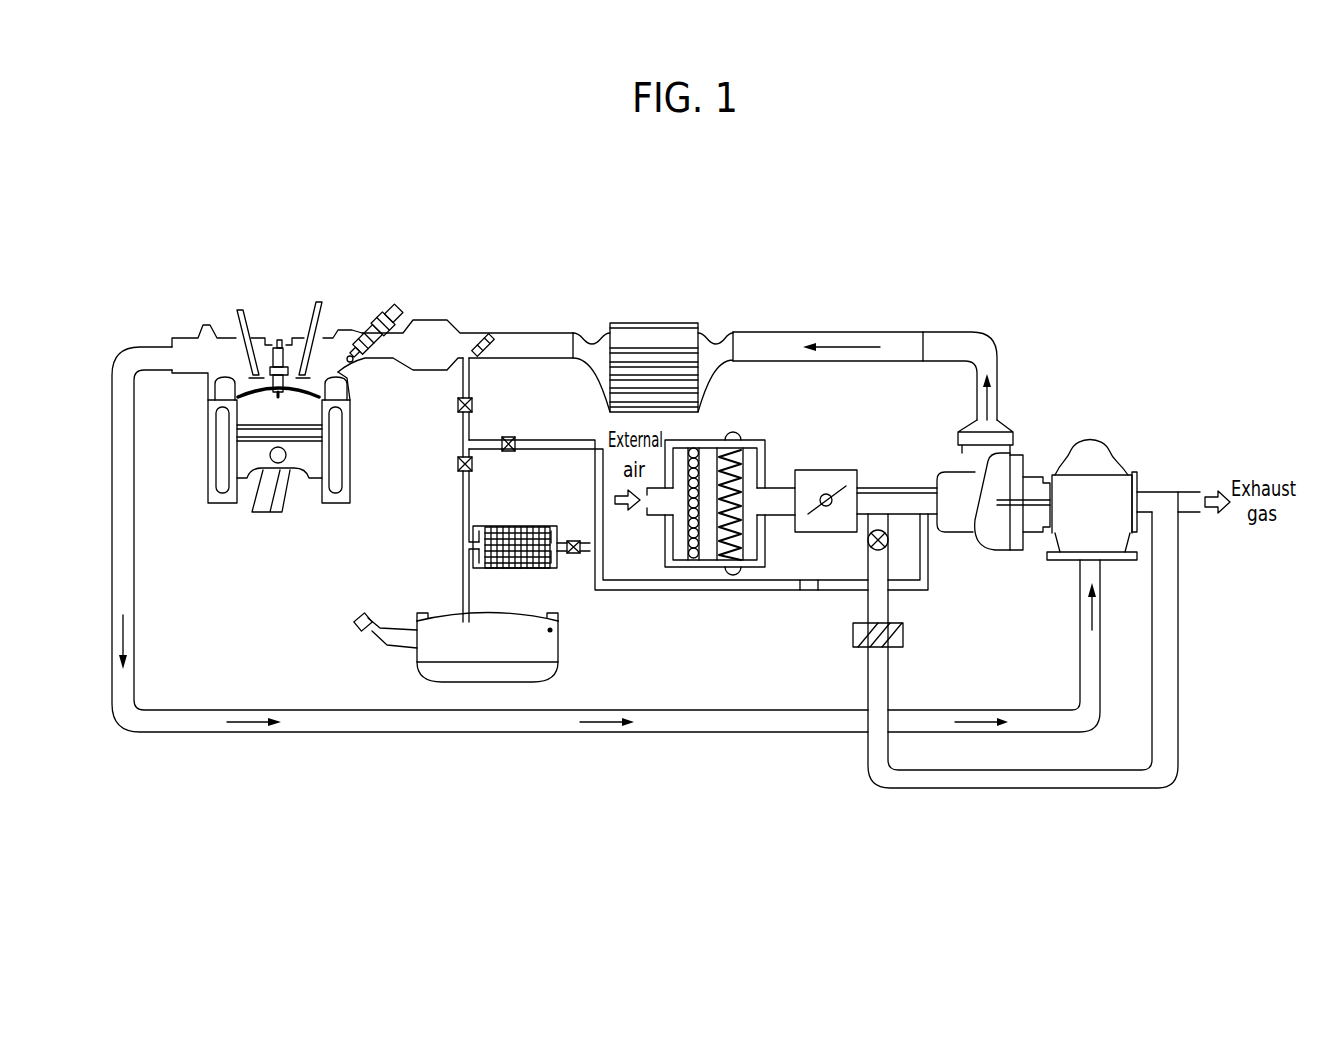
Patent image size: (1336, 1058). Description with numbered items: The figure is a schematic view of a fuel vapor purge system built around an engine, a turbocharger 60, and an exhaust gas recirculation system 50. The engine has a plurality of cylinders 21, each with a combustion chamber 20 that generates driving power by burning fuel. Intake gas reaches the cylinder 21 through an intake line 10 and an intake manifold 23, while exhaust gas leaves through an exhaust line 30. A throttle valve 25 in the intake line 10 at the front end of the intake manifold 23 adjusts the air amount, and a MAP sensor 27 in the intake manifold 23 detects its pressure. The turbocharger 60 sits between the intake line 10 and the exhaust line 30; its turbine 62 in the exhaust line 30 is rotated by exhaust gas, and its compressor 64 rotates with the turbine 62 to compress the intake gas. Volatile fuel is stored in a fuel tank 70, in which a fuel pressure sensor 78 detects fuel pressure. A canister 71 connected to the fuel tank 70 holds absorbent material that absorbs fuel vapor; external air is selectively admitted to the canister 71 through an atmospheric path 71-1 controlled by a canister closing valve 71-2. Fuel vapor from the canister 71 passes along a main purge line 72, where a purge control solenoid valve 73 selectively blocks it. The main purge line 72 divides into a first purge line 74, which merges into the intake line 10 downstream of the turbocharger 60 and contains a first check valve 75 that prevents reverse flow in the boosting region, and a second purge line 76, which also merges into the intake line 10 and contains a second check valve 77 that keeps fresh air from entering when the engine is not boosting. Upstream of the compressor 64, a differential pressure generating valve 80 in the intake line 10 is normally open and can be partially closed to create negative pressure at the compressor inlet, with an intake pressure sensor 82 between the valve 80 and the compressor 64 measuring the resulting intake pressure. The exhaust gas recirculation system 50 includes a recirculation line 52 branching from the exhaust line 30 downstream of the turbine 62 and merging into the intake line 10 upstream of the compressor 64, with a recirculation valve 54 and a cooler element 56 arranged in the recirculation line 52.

The intake line 10 is at (783, 488).
The combustion chamber 20 is at (257, 450).
The cylinder 21 is at (208, 448).
The intake manifold 23 is at (430, 320).
The throttle valve 25 is at (494, 342).
The MAP sensor 27 is at (450, 337).
The exhaust line 30 is at (705, 733).
The exhaust gas recirculation system 50 is at (1015, 640).
The recirculation line 52 is at (890, 665).
The recirculation valve 54 is at (888, 546).
The purge filter 56 is at (903, 636).
The turbocharger 60 is at (1030, 446).
The turbine 62 is at (1050, 382).
The compressor 64 is at (1017, 454).
The fuel tank 70 is at (558, 658).
The canister 71 is at (503, 526).
The atmospheric path 71-1 is at (564, 569).
The canister closing valve 71-2 is at (575, 541).
The main purge line 72 is at (462, 507).
The purge control solenoid valve 73 is at (458, 464).
The first purge line 74 is at (462, 433).
The first check valve 75 is at (458, 405).
The second purge line 76 is at (672, 591).
The second check valve 77 is at (508, 437).
The fuel pressure sensor 78 is at (553, 631).
The differential pressure generating valve 80 is at (833, 470).
The intake pressure sensor 82 is at (922, 498).